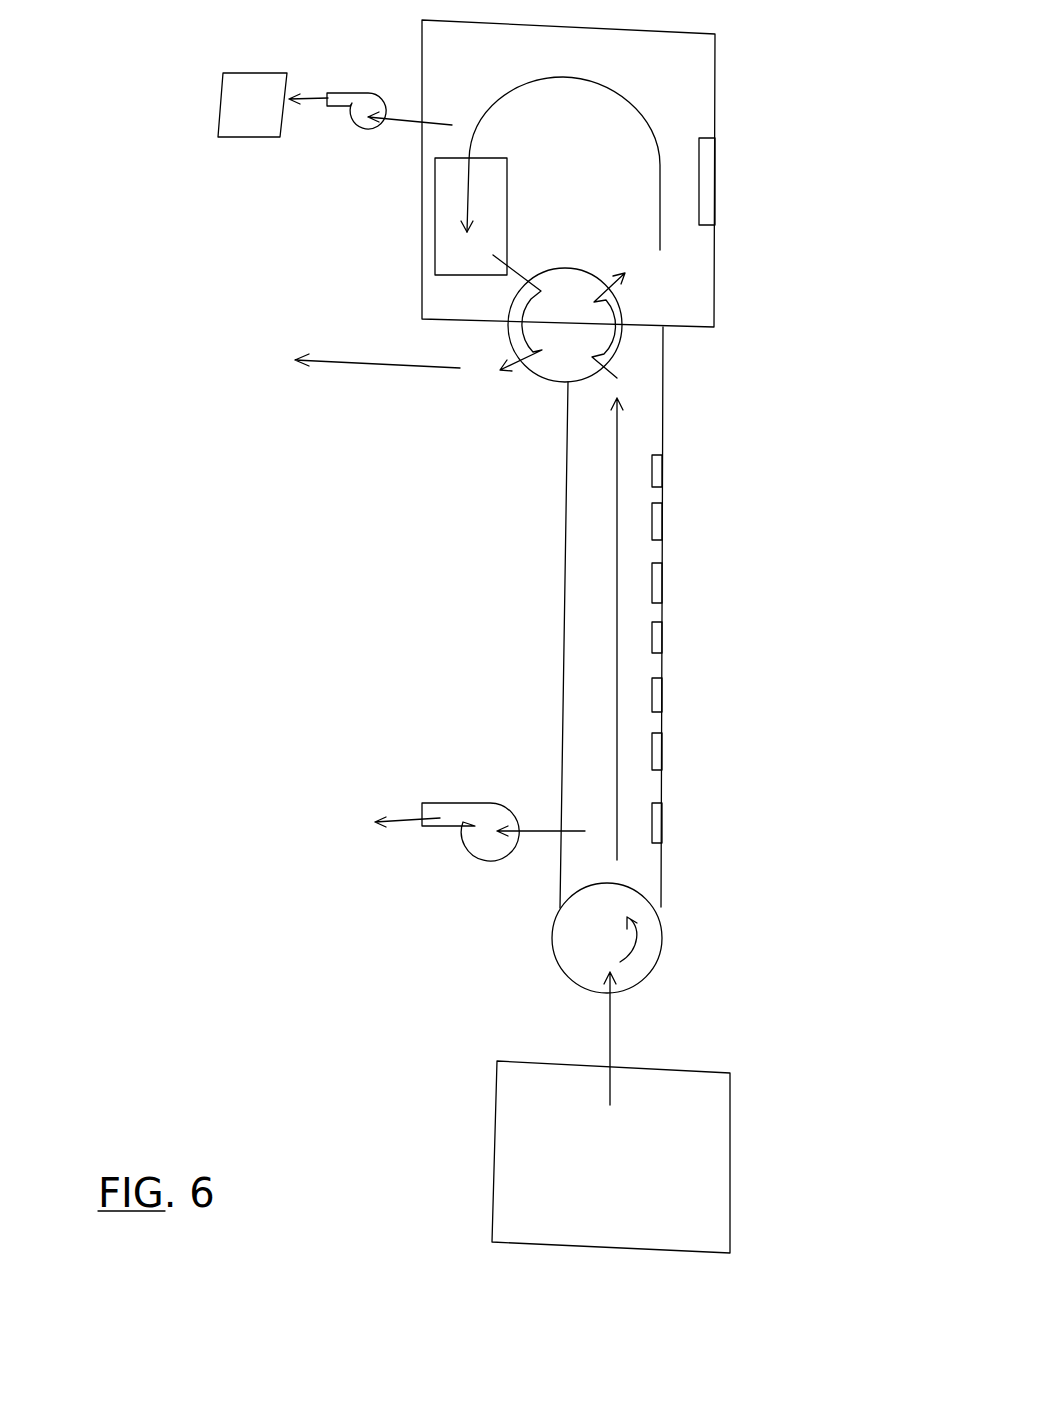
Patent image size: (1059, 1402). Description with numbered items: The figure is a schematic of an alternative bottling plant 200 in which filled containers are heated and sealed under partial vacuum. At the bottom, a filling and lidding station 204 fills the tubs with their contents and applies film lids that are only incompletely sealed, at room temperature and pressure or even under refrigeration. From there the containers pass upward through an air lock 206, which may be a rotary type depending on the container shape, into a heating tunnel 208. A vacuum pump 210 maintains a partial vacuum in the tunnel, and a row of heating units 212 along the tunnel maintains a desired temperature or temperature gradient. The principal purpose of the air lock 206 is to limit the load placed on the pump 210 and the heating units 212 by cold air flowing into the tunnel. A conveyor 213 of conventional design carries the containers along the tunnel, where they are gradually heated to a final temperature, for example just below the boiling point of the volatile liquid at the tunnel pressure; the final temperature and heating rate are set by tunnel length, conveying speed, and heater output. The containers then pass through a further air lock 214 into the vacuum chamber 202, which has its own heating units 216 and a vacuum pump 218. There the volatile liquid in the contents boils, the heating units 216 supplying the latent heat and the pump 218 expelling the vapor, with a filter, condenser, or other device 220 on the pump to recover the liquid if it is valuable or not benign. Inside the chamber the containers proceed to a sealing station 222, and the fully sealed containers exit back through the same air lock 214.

The bottling plant 200 is at (401, 1059).
The vacuum chamber 202 is at (697, 78).
The filling and lidding station 204 is at (703, 1167).
The air lock 206 is at (650, 947).
The heating tunnel 208 is at (648, 870).
The vacuum pump 210 is at (490, 862).
The heating units 212 is at (685, 751).
The conveyor 213 is at (616, 667).
The air lock 214 is at (557, 367).
The heating units 216 is at (713, 177).
The vacuum pump 218 is at (368, 134).
The filter, condenser, or other device 220 is at (250, 93).
The sealing station 222 is at (450, 237).